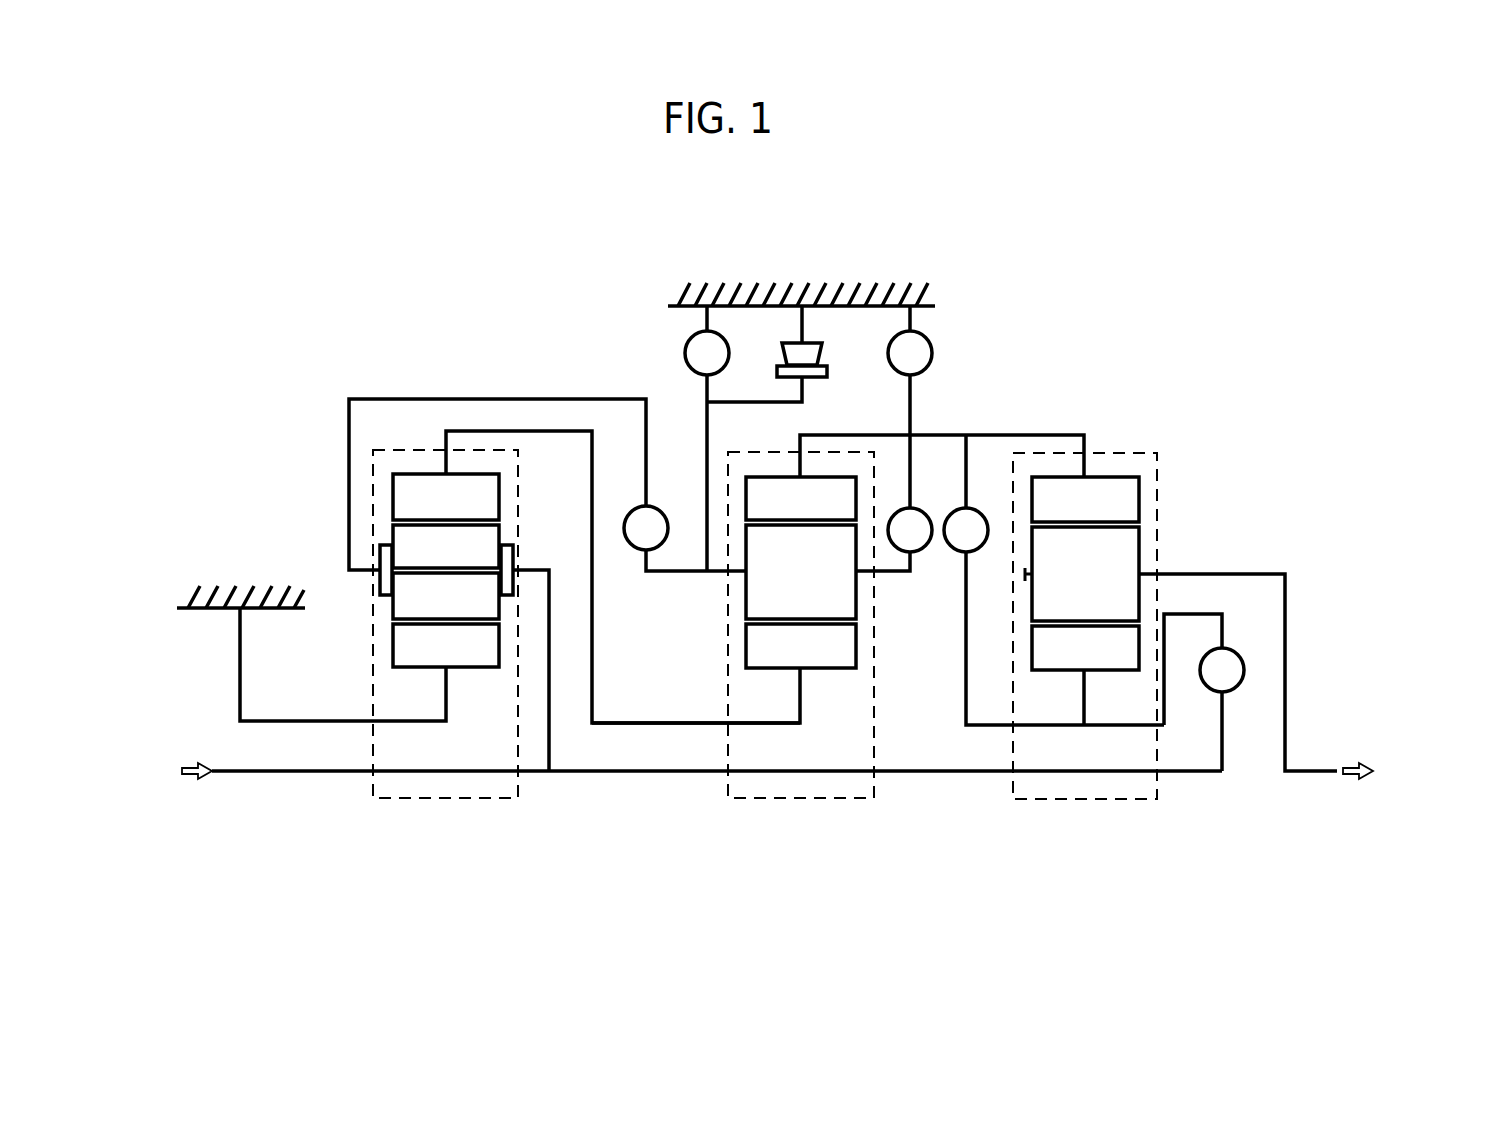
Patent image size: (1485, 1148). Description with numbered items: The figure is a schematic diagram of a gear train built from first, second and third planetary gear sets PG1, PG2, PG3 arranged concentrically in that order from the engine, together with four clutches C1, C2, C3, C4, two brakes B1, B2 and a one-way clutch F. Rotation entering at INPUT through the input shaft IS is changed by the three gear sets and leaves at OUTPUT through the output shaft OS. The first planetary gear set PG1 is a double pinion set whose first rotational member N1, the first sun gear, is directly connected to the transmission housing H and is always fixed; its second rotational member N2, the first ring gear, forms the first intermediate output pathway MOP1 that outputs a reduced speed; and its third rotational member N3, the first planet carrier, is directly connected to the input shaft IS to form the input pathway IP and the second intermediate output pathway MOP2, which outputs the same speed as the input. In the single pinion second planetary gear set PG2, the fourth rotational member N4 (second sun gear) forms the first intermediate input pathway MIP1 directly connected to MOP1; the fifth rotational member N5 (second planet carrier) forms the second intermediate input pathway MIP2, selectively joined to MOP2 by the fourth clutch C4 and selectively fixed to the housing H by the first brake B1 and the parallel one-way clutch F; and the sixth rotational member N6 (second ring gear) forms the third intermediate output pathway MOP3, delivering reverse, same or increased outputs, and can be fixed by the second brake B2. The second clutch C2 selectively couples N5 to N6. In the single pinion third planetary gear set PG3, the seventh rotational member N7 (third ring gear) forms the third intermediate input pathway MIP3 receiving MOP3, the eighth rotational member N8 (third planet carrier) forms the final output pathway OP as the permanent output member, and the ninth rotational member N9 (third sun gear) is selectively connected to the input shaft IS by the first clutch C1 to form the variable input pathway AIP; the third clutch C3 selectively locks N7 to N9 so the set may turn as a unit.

The transmission housing H is at (713, 300).
The first brake B1 is at (743, 438).
The second brake B2 is at (910, 407).
The one-way clutch F is at (814, 341).
The first clutch C1 is at (1222, 709).
The second clutch C2 is at (894, 539).
The third clutch C3 is at (1054, 580).
The fourth clutch C4 is at (646, 528).
The first planetary gear set PG1 is at (448, 807).
The second planetary gear set PG2 is at (806, 807).
The third planetary gear set PG3 is at (1085, 807).
The first rotational member N1 is at (446, 645).
The second rotational member N2 is at (446, 497).
The third rotational member N3 is at (360, 575).
The fourth rotational member N4 is at (801, 646).
The fifth rotational member N5 is at (880, 576).
The sixth rotational member N6 is at (801, 498).
The seventh rotational member N7 is at (1085, 499).
The eighth rotational member N8 is at (1165, 573).
The ninth rotational member N9 is at (1085, 675).
The input shaft IS is at (243, 773).
The output shaft OS is at (1310, 773).
The input pathway IP is at (535, 718).
The variable input pathway AIP is at (1180, 699).
The first intermediate input pathway MIP1 is at (822, 702).
The second intermediate input pathway MIP2 is at (708, 586).
The third intermediate input pathway MIP3 is at (1107, 444).
The first intermediate output pathway MOP1 is at (614, 462).
The second intermediate output pathway MOP2 is at (370, 364).
The third intermediate output pathway MOP3 is at (775, 466).
The final output pathway OP is at (1262, 549).
The input INPUT is at (163, 771).
The output OUTPUT is at (1404, 773).